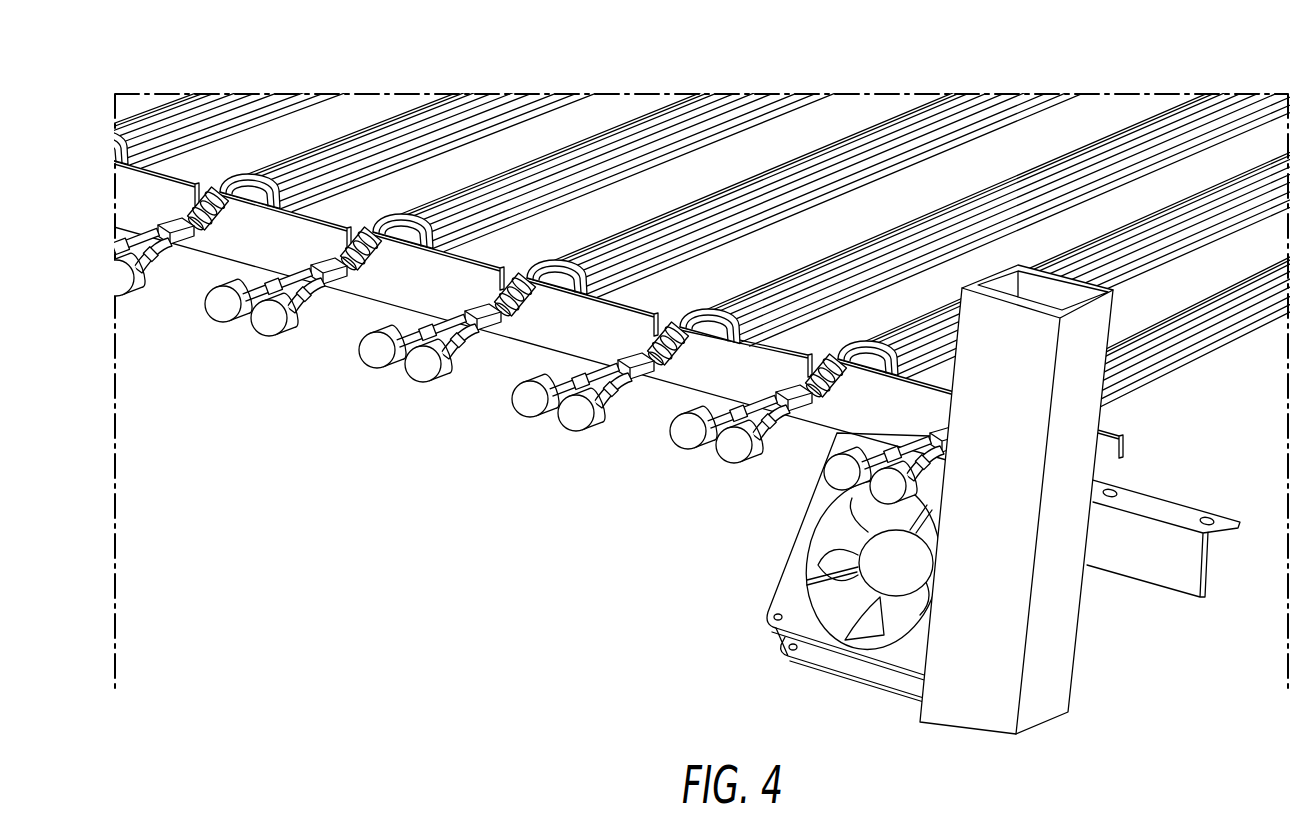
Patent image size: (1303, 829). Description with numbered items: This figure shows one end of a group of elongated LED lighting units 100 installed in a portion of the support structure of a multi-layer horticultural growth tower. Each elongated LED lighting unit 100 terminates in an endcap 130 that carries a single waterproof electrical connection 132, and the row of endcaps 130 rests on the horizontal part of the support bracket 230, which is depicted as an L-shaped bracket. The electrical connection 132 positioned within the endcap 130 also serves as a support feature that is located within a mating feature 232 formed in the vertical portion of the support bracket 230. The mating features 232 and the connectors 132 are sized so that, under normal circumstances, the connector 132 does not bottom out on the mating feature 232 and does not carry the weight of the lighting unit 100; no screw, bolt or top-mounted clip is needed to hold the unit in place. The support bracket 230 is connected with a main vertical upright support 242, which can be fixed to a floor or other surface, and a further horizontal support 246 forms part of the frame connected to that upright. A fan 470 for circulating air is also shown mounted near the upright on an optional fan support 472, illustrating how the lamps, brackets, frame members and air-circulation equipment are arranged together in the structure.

The elongated LED lighting unit 100 is at (1000, 177).
The endcap 130 is at (557, 262).
The electrical connection 132 is at (501, 334).
The support bracket 230 is at (788, 342).
The mating feature 232 is at (363, 218).
The vertical upright support 242 is at (1105, 446).
The horizontal support 246 is at (1163, 603).
The fan 470 is at (757, 627).
The fan support 472 is at (828, 441).